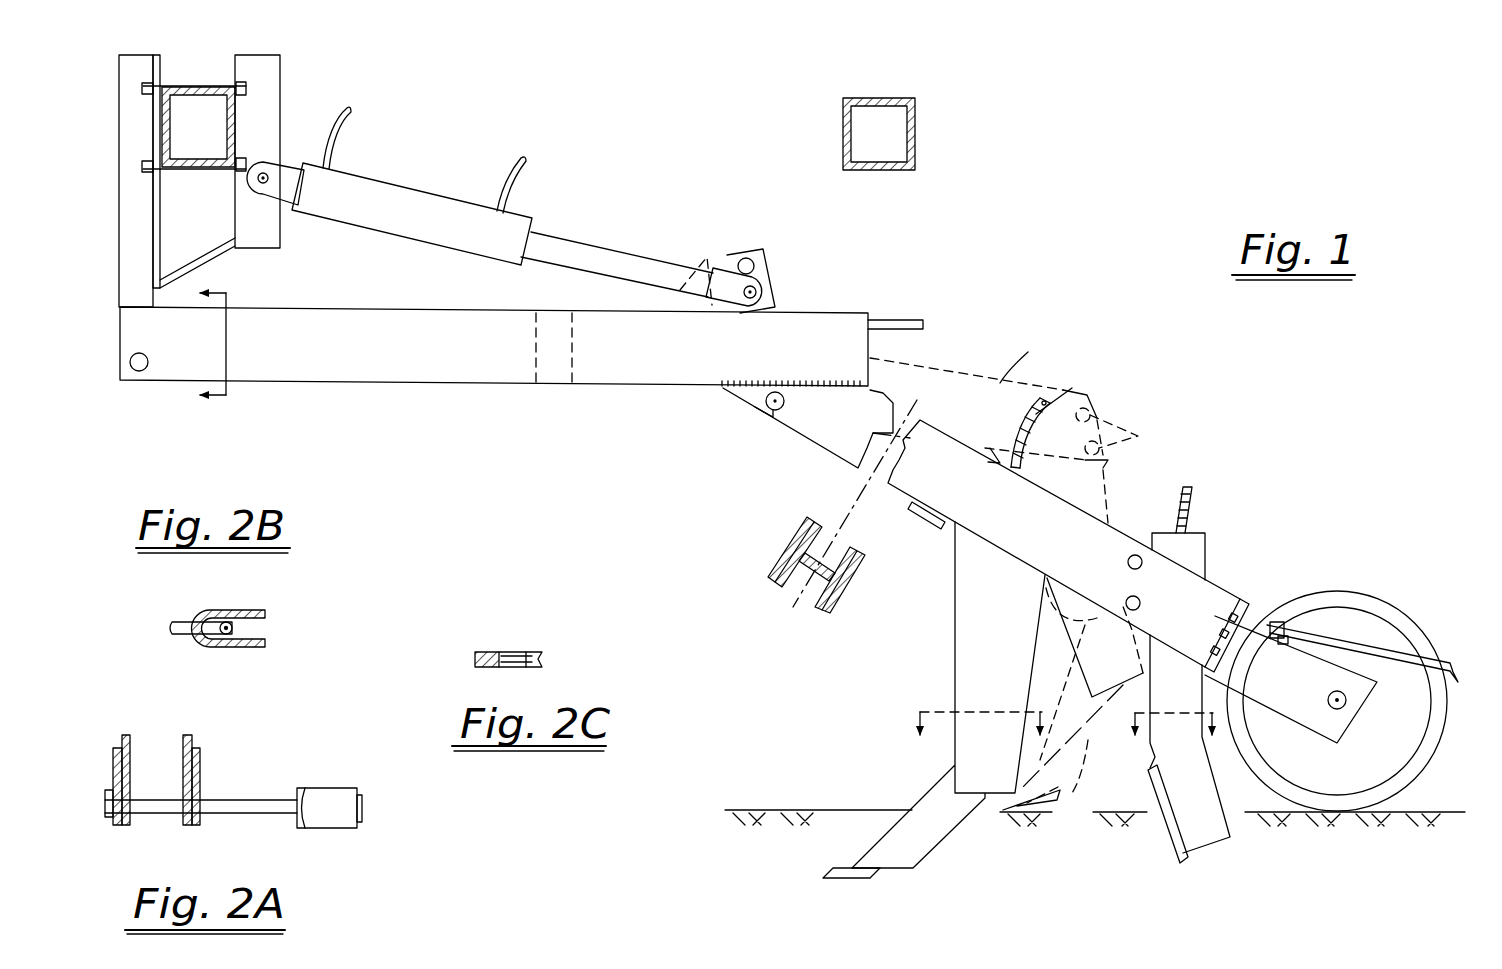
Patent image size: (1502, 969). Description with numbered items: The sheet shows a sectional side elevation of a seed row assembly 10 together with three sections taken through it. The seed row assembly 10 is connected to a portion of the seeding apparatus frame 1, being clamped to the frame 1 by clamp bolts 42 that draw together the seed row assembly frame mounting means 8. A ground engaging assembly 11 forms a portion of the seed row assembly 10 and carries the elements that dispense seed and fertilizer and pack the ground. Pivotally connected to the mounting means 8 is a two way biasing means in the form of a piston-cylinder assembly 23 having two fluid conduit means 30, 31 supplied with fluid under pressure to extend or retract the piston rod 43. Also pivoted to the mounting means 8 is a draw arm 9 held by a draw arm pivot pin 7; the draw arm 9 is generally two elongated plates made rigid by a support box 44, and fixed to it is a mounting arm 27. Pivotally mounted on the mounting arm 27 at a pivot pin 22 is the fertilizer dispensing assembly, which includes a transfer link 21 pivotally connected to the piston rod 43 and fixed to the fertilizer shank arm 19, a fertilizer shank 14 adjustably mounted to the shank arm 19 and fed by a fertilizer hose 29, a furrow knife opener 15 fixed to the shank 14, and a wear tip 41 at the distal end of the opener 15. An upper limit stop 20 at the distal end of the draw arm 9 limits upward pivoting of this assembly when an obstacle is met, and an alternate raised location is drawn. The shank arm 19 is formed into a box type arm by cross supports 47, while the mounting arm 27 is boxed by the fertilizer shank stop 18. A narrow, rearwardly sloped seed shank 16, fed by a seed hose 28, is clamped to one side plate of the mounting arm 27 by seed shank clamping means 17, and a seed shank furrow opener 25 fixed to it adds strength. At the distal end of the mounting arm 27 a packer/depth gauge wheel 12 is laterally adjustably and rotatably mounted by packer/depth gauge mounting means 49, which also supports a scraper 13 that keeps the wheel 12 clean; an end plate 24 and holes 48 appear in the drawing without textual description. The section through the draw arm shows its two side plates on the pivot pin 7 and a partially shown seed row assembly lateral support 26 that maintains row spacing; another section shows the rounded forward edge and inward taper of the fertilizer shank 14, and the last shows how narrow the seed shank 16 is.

In FIG. 1, the seeding apparatus frame 1 is at (185, 90).
In FIG. 1, the draw arm pivot pin 7 is at (136, 368).
In FIG. 2A, the draw arm pivot pin 7 is at (150, 806).
In FIG. 1, the seed row assembly frame mounting means 8 is at (131, 192).
In FIG. 2A, the seed row assembly frame mounting means 8 is at (183, 762).
In FIG. 1, the draw arm 9 is at (293, 372).
In FIG. 2A, the draw arm 9 is at (113, 760).
In FIG. 1, the seed row assembly 10 is at (980, 232).
In FIG. 1, the ground engaging assembly 11 is at (1175, 403).
In FIG. 1, the packer/depth gauge wheel 12 is at (1378, 606).
In FIG. 1, the scraper 13 is at (1432, 652).
In FIG. 1, the fertilizer shank 14 is at (953, 620).
In FIG. 2B, the fertilizer shank 14 is at (233, 616).
In FIG. 1, the furrow knife opener 15 is at (925, 815).
In FIG. 2B, the furrow knife opener 15 is at (181, 622).
In FIG. 1, the seed shank 16 is at (1160, 733).
In FIG. 2C, the seed shank 16 is at (475, 652).
In FIG. 1, the seed shank clamping means 17 is at (1138, 555).
In FIG. 1, the fertilizer shank stop 18 is at (922, 521).
In FIG. 1, the fertilizer shank arm 19 is at (750, 605).
In FIG. 1, the upper limit stop 20 is at (915, 320).
In FIG. 1, the transfer link 21 is at (768, 265).
In FIG. 1, the pivot pin 22 is at (774, 412).
In FIG. 1, the piston-cylinder assembly 23 is at (408, 198).
In FIG. 1, the end plate 24 is at (1236, 606).
In FIG. 1, the seed shank furrow opener 25 is at (1167, 823).
In FIG. 2A, the seed row assembly lateral support 26 is at (312, 818).
In FIG. 1, the mounting arm 27 is at (840, 435).
In FIG. 1, the seed hose 28 is at (1192, 505).
In FIG. 1, the fertilizer hose 29 is at (1060, 396).
In FIG. 1, the fluid conduit means 30 is at (342, 128).
In FIG. 1, the fluid conduit means 31 is at (516, 182).
In FIG. 1, the wear tip 41 is at (838, 876).
In FIG. 1, the clamp bolts 42 is at (248, 92).
In FIG. 1, the piston rod 43 is at (600, 250).
In FIG. 1, the support box 44 is at (540, 358).
In FIG. 1, the cross supports 47 is at (826, 542).
In FIG. 1, the holes 48 is at (1120, 431).
In FIG. 1, the packer/depth gauge mounting means 49 is at (1300, 652).